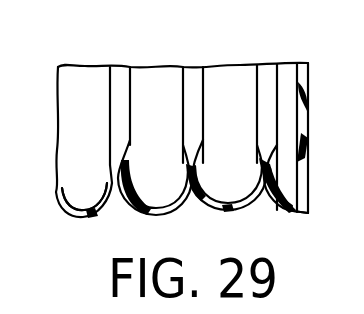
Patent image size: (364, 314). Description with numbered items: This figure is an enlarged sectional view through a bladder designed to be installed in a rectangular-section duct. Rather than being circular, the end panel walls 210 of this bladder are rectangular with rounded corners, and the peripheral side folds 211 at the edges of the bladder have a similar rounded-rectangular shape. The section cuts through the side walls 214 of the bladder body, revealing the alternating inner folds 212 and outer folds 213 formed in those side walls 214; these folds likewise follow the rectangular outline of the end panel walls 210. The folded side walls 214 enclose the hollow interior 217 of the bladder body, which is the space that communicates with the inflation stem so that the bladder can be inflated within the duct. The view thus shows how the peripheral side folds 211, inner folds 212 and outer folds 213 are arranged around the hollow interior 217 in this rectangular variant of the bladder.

The end panel wall 210 is at (309, 102).
The peripheral side fold 211 is at (308, 212).
The inner fold 212 is at (131, 129).
The outer fold 213 is at (160, 214).
The side wall 214 is at (93, 215).
The hollow interior 217 is at (87, 83).